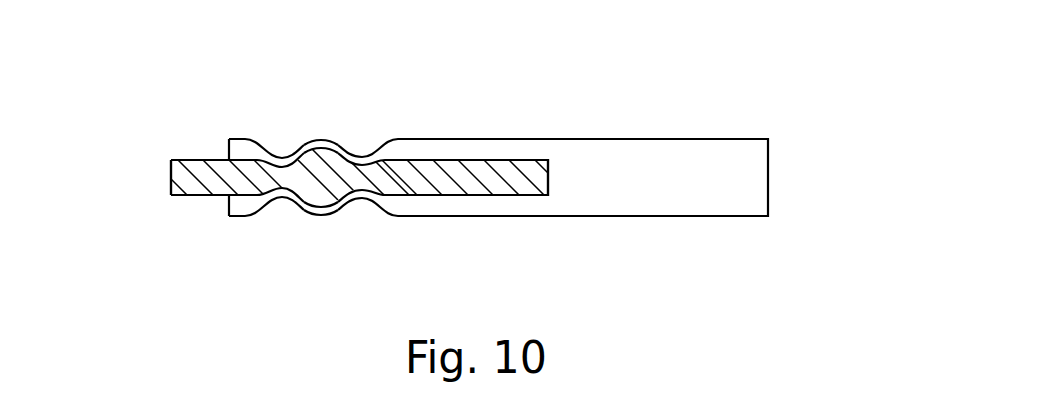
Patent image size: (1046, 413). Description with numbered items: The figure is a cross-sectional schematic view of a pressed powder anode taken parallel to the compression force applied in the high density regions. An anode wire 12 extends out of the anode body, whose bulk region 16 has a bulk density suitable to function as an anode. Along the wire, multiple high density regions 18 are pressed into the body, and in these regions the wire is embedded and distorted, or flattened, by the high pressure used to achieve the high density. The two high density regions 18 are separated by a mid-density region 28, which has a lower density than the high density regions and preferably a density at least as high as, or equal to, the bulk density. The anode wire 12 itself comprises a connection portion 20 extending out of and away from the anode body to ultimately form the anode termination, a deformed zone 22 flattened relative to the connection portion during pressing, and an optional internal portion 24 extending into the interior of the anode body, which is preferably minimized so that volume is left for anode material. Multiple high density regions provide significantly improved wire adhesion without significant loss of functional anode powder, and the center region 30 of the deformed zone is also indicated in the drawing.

The anode wire 12 is at (167, 182).
The bulk region 16 is at (527, 148).
The high density region 18 is at (283, 156).
The connection portion 20 is at (202, 177).
The deformed zone 22 is at (286, 178).
The internal portion 24 is at (487, 182).
The mid-density region 28 is at (321, 140).
The crimped center region 30 is at (322, 180).